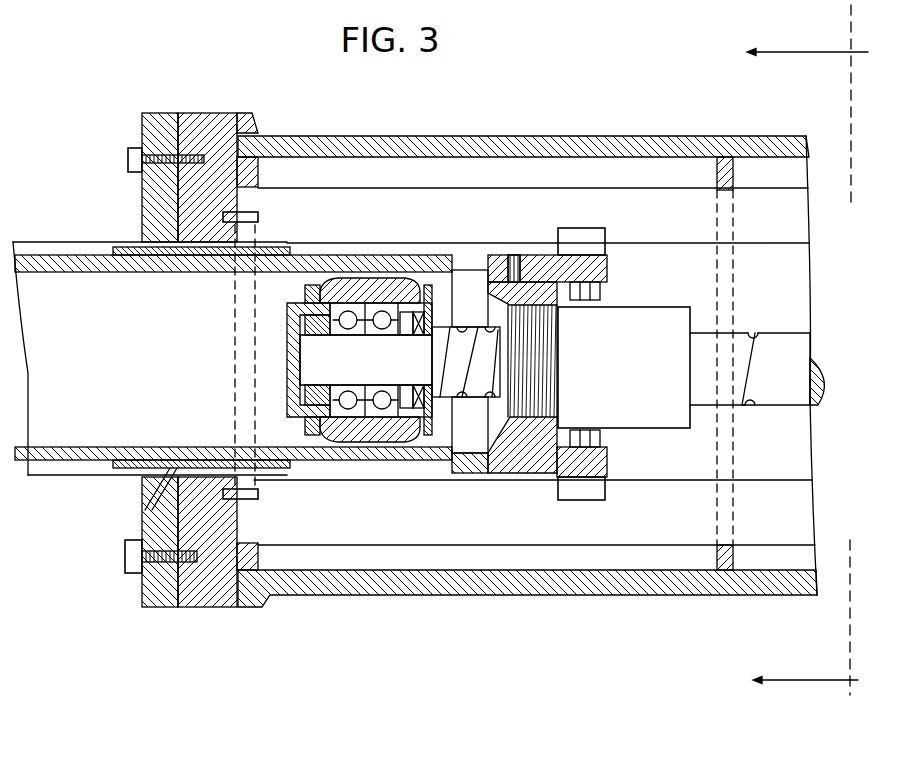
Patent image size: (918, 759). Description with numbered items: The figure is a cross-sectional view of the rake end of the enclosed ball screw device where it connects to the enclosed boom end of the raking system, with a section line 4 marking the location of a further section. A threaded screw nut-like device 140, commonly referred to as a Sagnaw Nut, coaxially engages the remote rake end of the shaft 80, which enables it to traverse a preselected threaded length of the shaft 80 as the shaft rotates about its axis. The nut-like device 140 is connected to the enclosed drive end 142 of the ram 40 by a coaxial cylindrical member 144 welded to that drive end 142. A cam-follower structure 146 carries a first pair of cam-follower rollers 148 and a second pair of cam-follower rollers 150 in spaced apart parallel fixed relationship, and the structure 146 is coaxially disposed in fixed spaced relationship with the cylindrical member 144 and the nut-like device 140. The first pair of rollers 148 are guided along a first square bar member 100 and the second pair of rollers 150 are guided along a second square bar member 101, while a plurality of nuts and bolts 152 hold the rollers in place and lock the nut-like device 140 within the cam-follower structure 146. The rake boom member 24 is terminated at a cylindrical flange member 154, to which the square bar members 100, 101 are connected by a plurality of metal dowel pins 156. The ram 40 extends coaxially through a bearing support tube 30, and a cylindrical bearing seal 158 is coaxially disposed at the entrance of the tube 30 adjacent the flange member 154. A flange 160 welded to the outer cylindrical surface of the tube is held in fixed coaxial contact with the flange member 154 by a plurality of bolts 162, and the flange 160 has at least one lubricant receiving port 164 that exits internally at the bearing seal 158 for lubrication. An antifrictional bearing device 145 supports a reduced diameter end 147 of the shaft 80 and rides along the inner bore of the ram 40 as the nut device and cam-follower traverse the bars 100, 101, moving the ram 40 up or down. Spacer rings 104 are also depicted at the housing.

The rake boom member 24 is at (525, 136).
The bearing support tube 30 is at (92, 242).
The ram 40 is at (125, 447).
The shaft 80 is at (789, 333).
The first square bar member 100 is at (690, 532).
The second square bar member 101 is at (420, 205).
The spacer ring 104 is at (262, 160).
The threaded screw nut-like device 140 is at (631, 299).
The drive end of ram 142 is at (399, 480).
The coaxial cylindrical member 144 is at (514, 474).
The antifrictional bearing device 145 is at (277, 348).
The cam-follower structure 146 is at (607, 463).
The reduced diameter end of shaft 147 is at (352, 366).
The first pair of cam-follower rollers 148 is at (605, 490).
The second pair of cam-follower rollers 150 is at (606, 242).
The nuts and bolts 152 is at (600, 430).
The cylindrical flange member 154 is at (238, 118).
The metal dowel pins 156 is at (258, 216).
The cylindrical bearing seal 158 is at (200, 257).
The flange 160 is at (178, 92).
The bolts 162 is at (130, 152).
The lubricant receiving port 164 is at (142, 507).
The section line 4- 4 is at (807, 358).